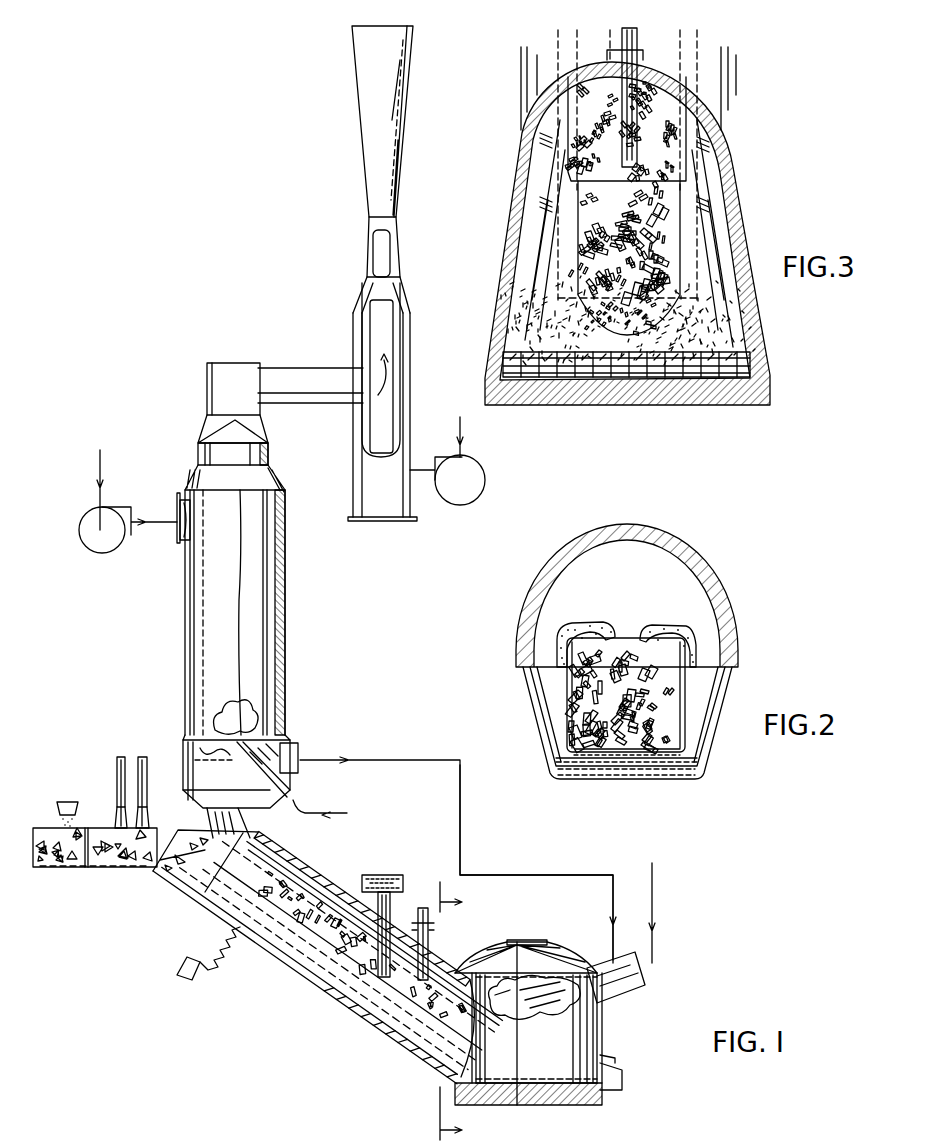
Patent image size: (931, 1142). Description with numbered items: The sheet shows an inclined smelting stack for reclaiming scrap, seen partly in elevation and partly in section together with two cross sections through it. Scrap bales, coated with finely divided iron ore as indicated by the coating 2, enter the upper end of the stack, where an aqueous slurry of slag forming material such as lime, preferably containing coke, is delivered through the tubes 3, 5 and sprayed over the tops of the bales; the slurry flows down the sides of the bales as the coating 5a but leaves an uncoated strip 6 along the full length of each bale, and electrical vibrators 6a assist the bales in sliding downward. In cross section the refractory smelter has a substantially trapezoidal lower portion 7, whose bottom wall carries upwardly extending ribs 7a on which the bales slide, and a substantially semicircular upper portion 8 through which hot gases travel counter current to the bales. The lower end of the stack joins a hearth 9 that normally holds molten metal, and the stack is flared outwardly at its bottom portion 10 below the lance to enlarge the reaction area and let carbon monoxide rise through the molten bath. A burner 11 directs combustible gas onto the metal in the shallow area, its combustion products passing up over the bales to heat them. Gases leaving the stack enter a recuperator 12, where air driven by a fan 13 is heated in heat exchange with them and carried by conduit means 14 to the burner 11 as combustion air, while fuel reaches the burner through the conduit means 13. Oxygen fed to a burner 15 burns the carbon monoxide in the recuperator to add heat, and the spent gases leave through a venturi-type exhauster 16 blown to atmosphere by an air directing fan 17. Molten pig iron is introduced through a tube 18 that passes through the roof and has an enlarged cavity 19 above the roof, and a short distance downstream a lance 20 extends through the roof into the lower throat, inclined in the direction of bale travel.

In FIG. 1, the coating of finely divided iron ore 2 is at (63, 800).
In FIG. 1, the tube 3 is at (120, 757).
In FIG. 1, the tube 5 is at (143, 757).
In FIG. 2, the slag slurry coating 5a is at (698, 645).
In FIG. 2, the uncoated strip 6 is at (627, 630).
In FIG. 1, the electrical vibrator 6a is at (215, 988).
In FIG. 2, the trapezoidal lower portion 7 is at (718, 735).
In FIG. 2, the upwardly extending ribs 7a is at (686, 777).
In FIG. 3, the semicircular upper portion 8 is at (713, 107).
In FIG. 2, the semicircular upper portion 8 is at (700, 548).
In FIG. 1, the hearth 9 is at (600, 1043).
In FIG. 3, the flared bottom portion 10 is at (765, 356).
In FIG. 1, the burner 11 is at (640, 990).
In FIG. 1, the recuperator 12 is at (288, 571).
In FIG. 1, the fan / fuel conduit means 13 is at (107, 503).
In FIG. 1, the conduit means 14 is at (598, 875).
In FIG. 1, the burner 15 is at (293, 785).
In FIG. 1, the venturi-type exhauster 16 is at (397, 253).
In FIG. 1, the air directing fan 17 is at (485, 472).
In FIG. 1, the tube 18 is at (390, 900).
In FIG. 1, the enlarged cavity 19 is at (362, 878).
In FIG. 1, the lance 20 is at (432, 935).